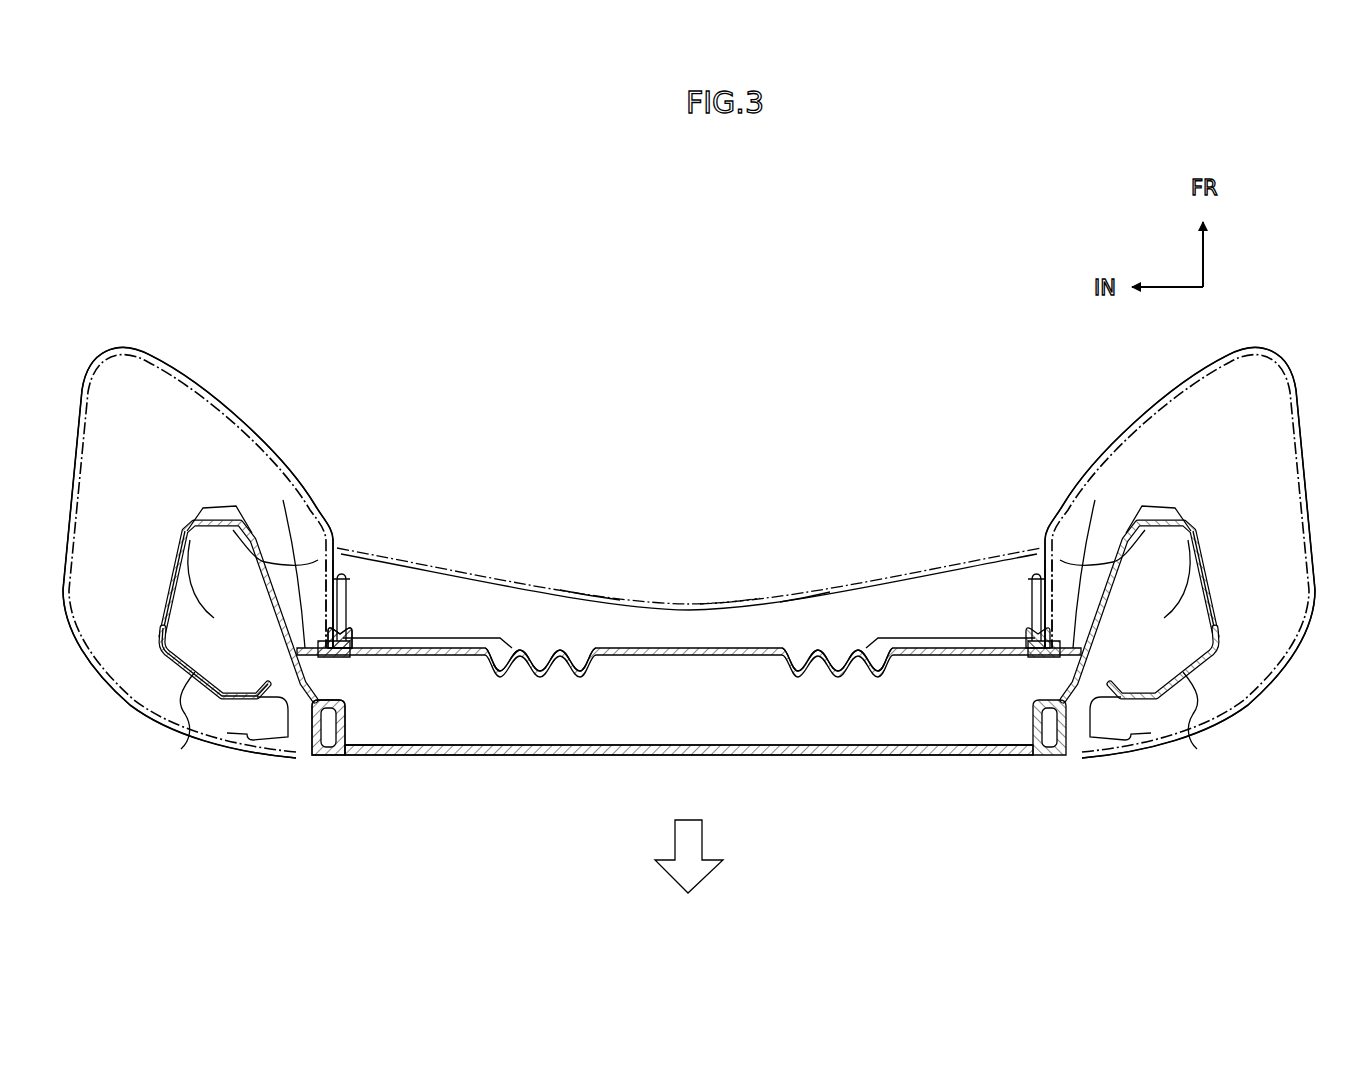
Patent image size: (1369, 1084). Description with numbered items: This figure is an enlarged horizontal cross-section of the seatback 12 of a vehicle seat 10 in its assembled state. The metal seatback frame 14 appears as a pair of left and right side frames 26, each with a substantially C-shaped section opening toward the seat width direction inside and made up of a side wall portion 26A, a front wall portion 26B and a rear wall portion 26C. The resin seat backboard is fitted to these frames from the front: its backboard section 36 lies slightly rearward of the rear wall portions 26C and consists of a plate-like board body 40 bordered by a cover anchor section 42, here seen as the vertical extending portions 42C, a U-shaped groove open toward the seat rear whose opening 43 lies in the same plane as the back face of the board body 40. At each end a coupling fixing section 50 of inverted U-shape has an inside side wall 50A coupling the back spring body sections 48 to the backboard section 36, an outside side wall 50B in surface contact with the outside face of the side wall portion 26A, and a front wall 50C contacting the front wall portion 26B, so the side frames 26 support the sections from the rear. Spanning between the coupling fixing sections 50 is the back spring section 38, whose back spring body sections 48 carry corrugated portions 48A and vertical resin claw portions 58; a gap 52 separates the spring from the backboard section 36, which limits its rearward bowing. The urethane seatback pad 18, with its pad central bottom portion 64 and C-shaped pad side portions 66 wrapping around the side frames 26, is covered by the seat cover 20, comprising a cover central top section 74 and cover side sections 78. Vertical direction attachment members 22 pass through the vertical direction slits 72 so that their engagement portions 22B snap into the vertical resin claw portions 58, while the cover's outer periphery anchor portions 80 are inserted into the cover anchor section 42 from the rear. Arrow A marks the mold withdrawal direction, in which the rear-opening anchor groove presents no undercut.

The vehicle seat 10 is at (1180, 553).
The seatback 12 is at (690, 492).
The seatback frame 14 is at (215, 662).
The seatback pad 18 is at (800, 596).
The seat cover 20 is at (664, 596).
The vertical direction attachment member 22 is at (340, 638).
The engagement portion 22B is at (352, 638).
The side frame 26 is at (170, 668).
The side wall portion 26A is at (198, 604).
The front wall portion 26B is at (285, 560).
The rear wall portion 26C is at (195, 676).
The backboard section 36 is at (832, 758).
The back spring section 38 is at (840, 624).
The board body 40 is at (530, 757).
The cover anchor section 42 is at (328, 727).
The vertical extending portion 42C is at (320, 732).
The opening 43 is at (328, 758).
The back spring body section 48 is at (916, 640).
The corrugated portion 48A is at (557, 645).
The coupling fixing section 50 is at (175, 546).
The inside side wall 50A is at (330, 572).
The outside side wall 50B is at (170, 585).
The front wall 50C is at (222, 530).
The gap 52 is at (700, 704).
The vertical resin claw portion 58 is at (352, 656).
The pad central bottom portion 64 is at (727, 600).
The pad side portion 66 is at (240, 425).
The vertical direction slit 72 is at (360, 549).
The cover central top section 74 is at (590, 594).
The cover side section 78 is at (207, 387).
The outer periphery anchor portion 80 is at (350, 749).
The mold withdrawal direction A is at (702, 840).